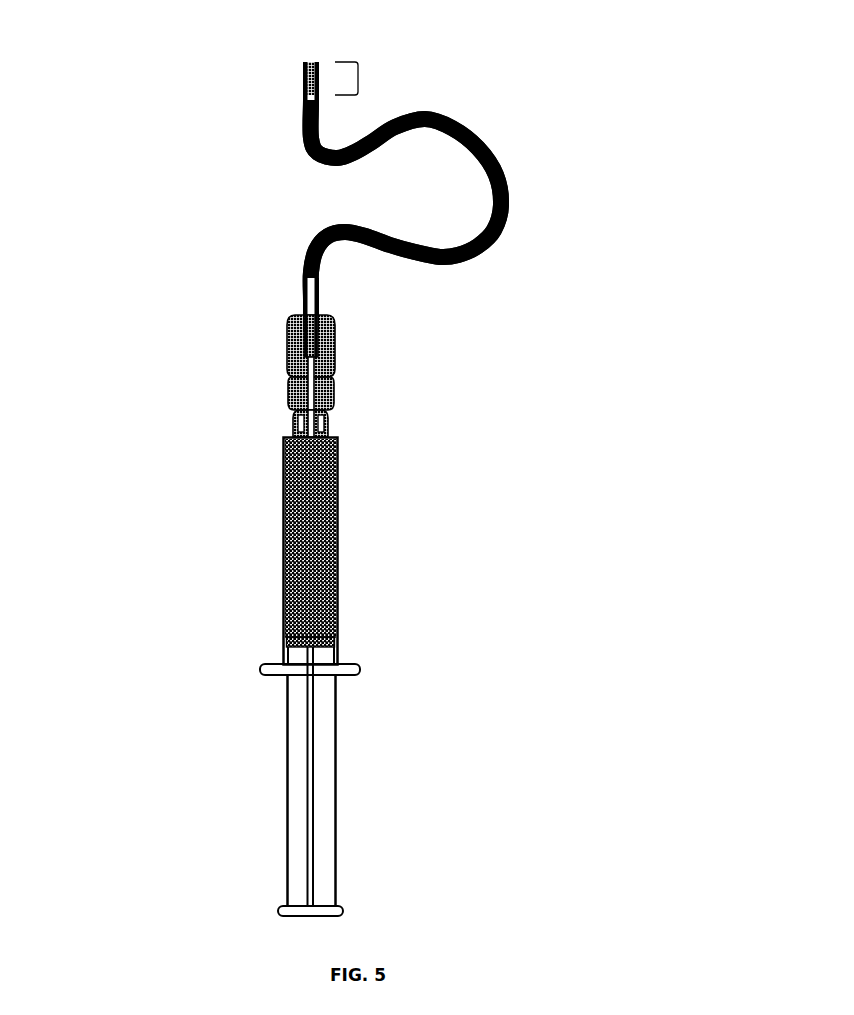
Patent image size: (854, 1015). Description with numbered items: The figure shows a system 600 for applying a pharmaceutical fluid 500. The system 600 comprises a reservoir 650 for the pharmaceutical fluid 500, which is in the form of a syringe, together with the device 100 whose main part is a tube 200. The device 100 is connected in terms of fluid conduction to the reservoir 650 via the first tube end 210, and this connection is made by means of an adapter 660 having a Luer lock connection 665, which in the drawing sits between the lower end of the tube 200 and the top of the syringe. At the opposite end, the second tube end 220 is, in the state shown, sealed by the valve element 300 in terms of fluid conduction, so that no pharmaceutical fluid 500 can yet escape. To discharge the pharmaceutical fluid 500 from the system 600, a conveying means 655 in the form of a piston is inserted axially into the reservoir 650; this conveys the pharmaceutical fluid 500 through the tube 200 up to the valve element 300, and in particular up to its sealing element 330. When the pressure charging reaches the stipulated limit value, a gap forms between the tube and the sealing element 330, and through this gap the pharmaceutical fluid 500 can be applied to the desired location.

The device 100 is at (500, 145).
The tube 200 is at (500, 238).
The first tube end 210 is at (292, 292).
The second tube end 220 is at (290, 68).
The valve element 300 is at (358, 78).
The sealing element 330 is at (318, 62).
The pharmaceutical fluid 500 is at (313, 485).
The system 600 is at (167, 143).
The reservoir 650 is at (445, 563).
The conveying means 655 is at (337, 755).
The adapter 660 is at (255, 315).
The Luer lock connection 665 is at (328, 422).